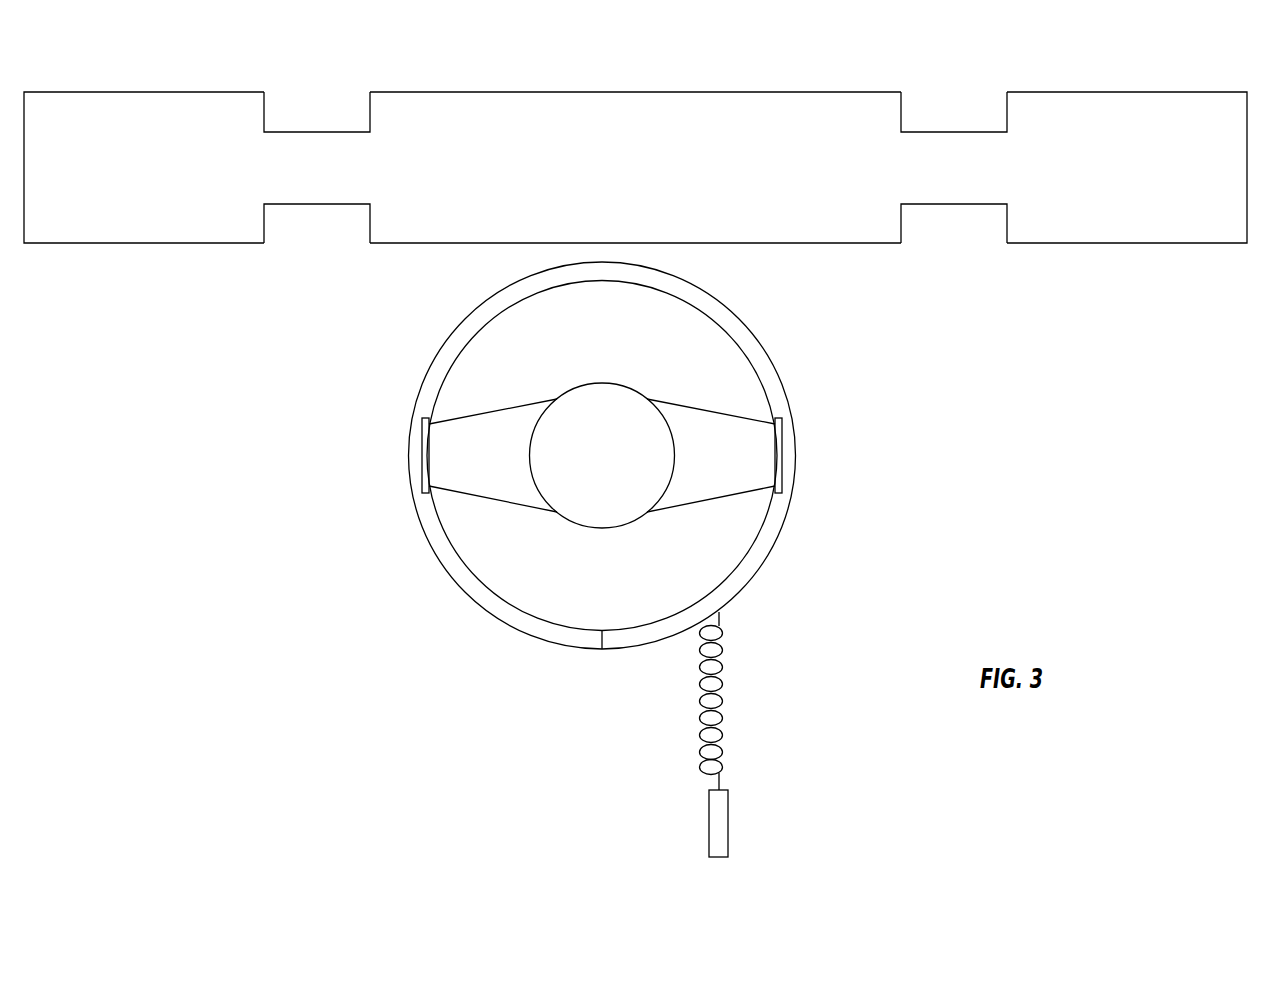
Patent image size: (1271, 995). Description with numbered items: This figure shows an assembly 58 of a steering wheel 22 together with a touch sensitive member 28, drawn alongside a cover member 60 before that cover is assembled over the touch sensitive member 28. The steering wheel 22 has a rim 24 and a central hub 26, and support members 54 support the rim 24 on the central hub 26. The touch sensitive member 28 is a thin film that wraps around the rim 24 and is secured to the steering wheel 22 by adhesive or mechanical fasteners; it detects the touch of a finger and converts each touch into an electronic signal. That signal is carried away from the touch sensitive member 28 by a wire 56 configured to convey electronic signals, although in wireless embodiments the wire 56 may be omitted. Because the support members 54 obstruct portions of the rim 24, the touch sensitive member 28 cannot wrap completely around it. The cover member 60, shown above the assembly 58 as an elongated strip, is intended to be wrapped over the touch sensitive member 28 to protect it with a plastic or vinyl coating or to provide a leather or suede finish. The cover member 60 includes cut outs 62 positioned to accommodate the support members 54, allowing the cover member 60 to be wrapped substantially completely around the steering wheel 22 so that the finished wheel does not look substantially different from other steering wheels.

The steering wheel 22 is at (772, 473).
The rim 24 is at (783, 455).
The central hub 26 is at (602, 382).
The touch sensitive member 28 is at (445, 570).
The support members 54 is at (715, 412).
The wire 56 is at (720, 783).
The assembly 58 is at (768, 353).
The cover member 60 is at (833, 118).
The cut outs 62 is at (320, 112).